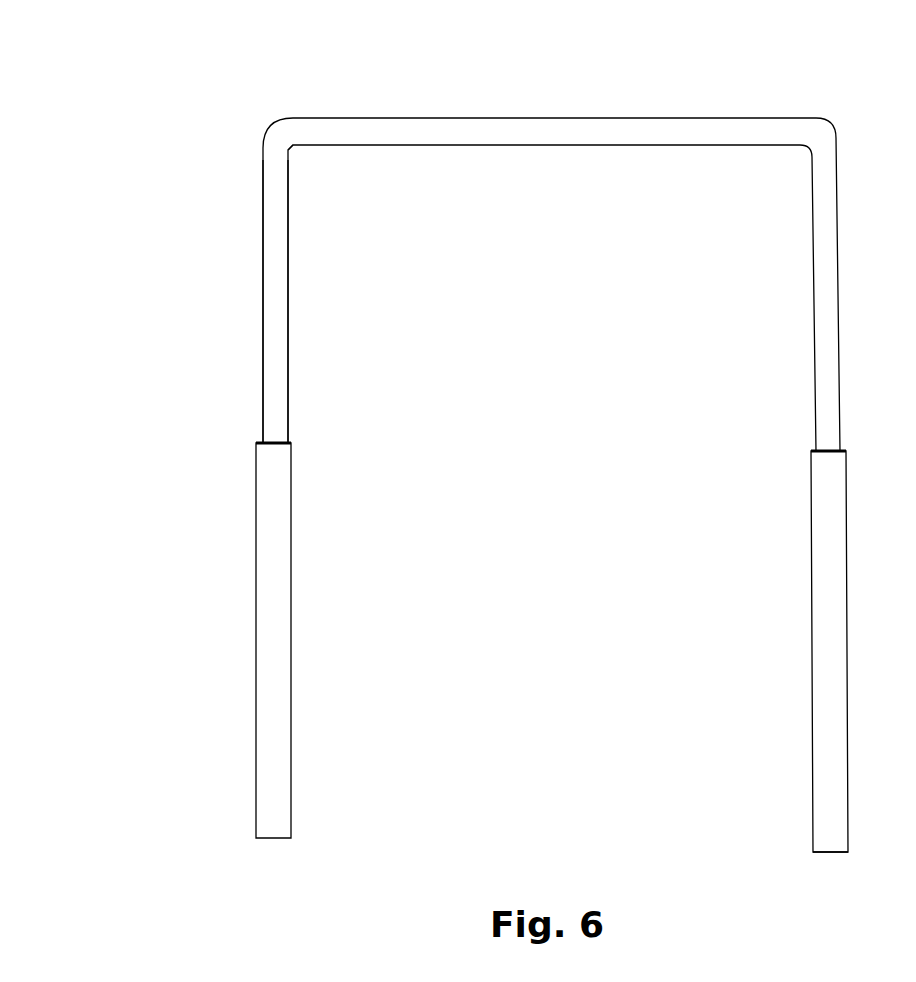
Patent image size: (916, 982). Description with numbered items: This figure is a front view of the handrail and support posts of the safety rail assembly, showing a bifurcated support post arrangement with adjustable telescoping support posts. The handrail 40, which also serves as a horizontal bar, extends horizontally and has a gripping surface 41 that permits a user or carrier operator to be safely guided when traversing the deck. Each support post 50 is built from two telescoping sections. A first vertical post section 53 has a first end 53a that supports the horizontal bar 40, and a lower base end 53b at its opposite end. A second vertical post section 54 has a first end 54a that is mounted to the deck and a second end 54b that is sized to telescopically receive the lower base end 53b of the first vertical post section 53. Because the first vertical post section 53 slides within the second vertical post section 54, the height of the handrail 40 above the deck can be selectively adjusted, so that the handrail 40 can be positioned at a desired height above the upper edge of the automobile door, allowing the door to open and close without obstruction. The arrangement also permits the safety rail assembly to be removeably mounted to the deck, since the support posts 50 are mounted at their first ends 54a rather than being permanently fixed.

The handrail 40 is at (475, 118).
The gripping surface 41 is at (650, 135).
The support post 50 is at (120, 347).
The first vertical post section 53 is at (290, 280).
The first end of the first vertical post section 53a is at (292, 157).
The lower base end of the first vertical post section 53b is at (288, 420).
The second vertical post section 54 is at (811, 685).
The first end of the second vertical post section 54a is at (813, 848).
The second end of the second vertical post section 54b is at (808, 476).